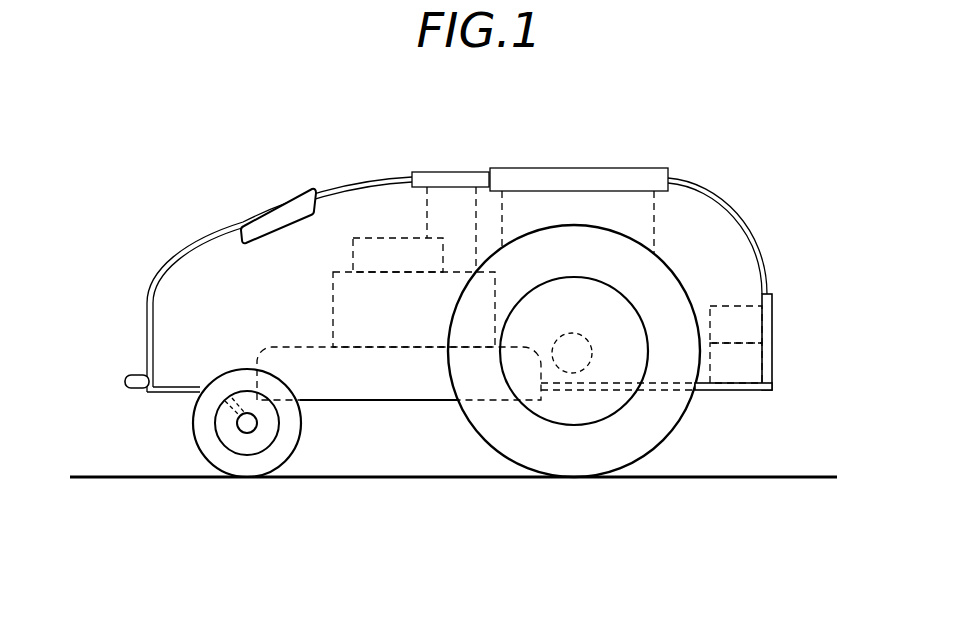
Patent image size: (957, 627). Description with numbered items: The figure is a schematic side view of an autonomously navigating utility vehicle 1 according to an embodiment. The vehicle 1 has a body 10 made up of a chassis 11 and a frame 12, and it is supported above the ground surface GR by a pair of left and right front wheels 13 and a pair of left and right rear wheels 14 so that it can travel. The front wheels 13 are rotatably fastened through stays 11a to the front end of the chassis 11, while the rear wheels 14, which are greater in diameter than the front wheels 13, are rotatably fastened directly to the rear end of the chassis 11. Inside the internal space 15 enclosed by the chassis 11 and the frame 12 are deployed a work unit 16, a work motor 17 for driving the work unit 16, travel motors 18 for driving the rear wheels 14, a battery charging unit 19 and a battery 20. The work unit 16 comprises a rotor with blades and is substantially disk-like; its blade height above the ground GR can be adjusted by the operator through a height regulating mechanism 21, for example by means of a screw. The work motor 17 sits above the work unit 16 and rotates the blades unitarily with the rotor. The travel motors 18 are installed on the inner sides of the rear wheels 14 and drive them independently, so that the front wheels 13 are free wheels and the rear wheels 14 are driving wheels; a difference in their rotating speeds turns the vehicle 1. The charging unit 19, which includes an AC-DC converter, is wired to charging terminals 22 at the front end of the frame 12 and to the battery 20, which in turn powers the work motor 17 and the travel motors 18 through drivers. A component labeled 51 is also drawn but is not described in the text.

The autonomously navigating utility vehicle 1 is at (720, 182).
The body 10 is at (836, 330).
The chassis 11 is at (772, 362).
The stays 11a is at (216, 420).
The frame 12 is at (773, 297).
The front wheels 13 is at (201, 451).
The rear wheels 14 is at (473, 430).
The internal space 15 is at (735, 238).
The work unit 16 is at (351, 387).
The work motor 17 is at (372, 319).
The travel motors 18 is at (578, 337).
The battery charging unit 19 is at (722, 337).
The battery 20 is at (722, 374).
The height regulating mechanism 21 is at (382, 267).
The charging terminals 22 is at (141, 373).
The sensor 51 is at (288, 190).
The ground surface GR is at (712, 476).